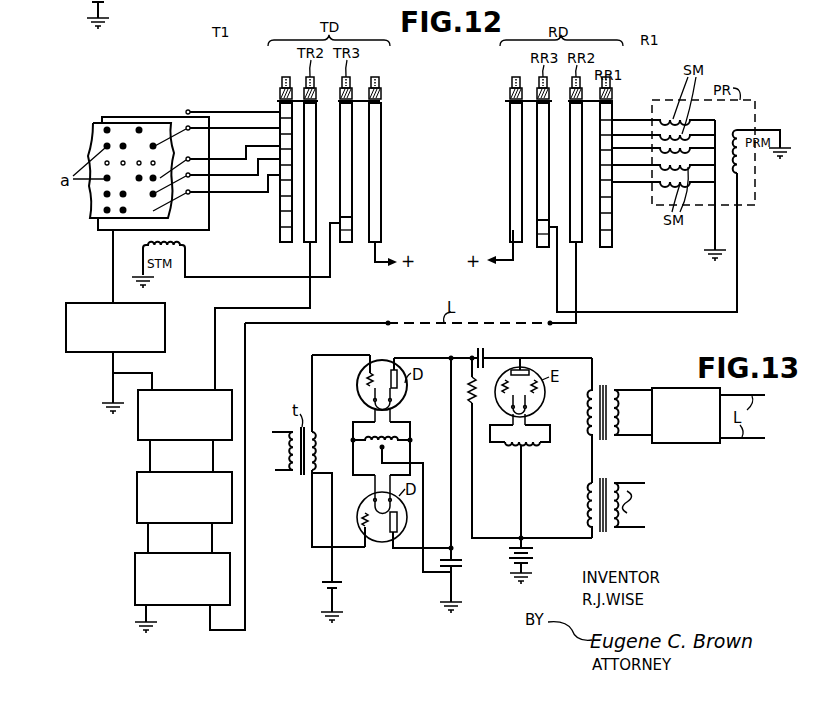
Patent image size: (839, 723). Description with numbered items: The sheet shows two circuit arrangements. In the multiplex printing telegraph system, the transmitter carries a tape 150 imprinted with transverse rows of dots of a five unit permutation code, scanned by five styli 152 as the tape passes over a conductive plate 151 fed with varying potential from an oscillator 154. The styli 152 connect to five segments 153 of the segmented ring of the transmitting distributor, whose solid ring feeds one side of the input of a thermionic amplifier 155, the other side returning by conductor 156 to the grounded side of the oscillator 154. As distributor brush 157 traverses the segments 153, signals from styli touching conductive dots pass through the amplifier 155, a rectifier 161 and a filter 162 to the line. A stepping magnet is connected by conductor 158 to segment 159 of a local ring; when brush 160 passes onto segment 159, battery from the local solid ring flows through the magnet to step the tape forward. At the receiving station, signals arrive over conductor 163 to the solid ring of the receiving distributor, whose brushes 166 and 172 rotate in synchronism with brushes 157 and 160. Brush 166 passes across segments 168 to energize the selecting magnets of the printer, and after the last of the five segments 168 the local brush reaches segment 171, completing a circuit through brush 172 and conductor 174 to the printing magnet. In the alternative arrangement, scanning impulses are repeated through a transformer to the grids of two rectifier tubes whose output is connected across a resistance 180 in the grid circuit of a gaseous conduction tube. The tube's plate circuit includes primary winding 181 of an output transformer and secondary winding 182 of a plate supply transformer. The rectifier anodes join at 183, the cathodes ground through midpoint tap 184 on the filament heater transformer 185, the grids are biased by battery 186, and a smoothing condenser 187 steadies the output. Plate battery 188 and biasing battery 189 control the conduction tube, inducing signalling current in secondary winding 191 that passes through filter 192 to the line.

In FIG. 12, the tape 150 is at (103, 134).
In FIG. 12, the conductive plate 151 is at (131, 117).
In FIG. 12, the styli 152 is at (178, 118).
In FIG. 12, the segments 153 is at (280, 141).
In FIG. 12, the oscillator 154 is at (66, 315).
In FIG. 12, the thermionic amplifier 155 is at (138, 424).
In FIG. 12, the conductor 156 is at (146, 372).
In FIG. 12, the distributor brush 157 is at (283, 100).
In FIG. 12, the conductor 158 is at (282, 278).
In FIG. 12, the segment 159 is at (347, 224).
In FIG. 12, the distributor brush 160 is at (380, 102).
In FIG. 12, the rectifier 161 is at (137, 497).
In FIG. 12, the filter 162 is at (134, 568).
In FIG. 12, the conductor 163 is at (578, 323).
In FIG. 12, the brush 166 is at (613, 110).
In FIG. 12, the segments 168 is at (609, 147).
In FIG. 12, the segment 171 is at (540, 229).
In FIG. 12, the brush 172 is at (510, 104).
In FIG. 12, the conductor 174 is at (694, 313).
In FIG. 13, the resistance 180 is at (476, 392).
In FIG. 13, the primary winding 181 is at (590, 410).
In FIG. 13, the secondary winding 182 is at (589, 502).
In FIG. 13, the anode connection point 183 is at (455, 350).
In FIG. 13, the midpoint tap 184 is at (385, 457).
In FIG. 13, the filament heater circuit transformer 185 is at (388, 437).
In FIG. 13, the battery 186 is at (342, 581).
In FIG. 13, the smoothing condenser 187 is at (456, 565).
In FIG. 13, the battery 188 is at (531, 552).
In FIG. 13, the battery 189 is at (484, 355).
In FIG. 13, the secondary winding 191 is at (633, 412).
In FIG. 13, the filter 192 is at (677, 443).